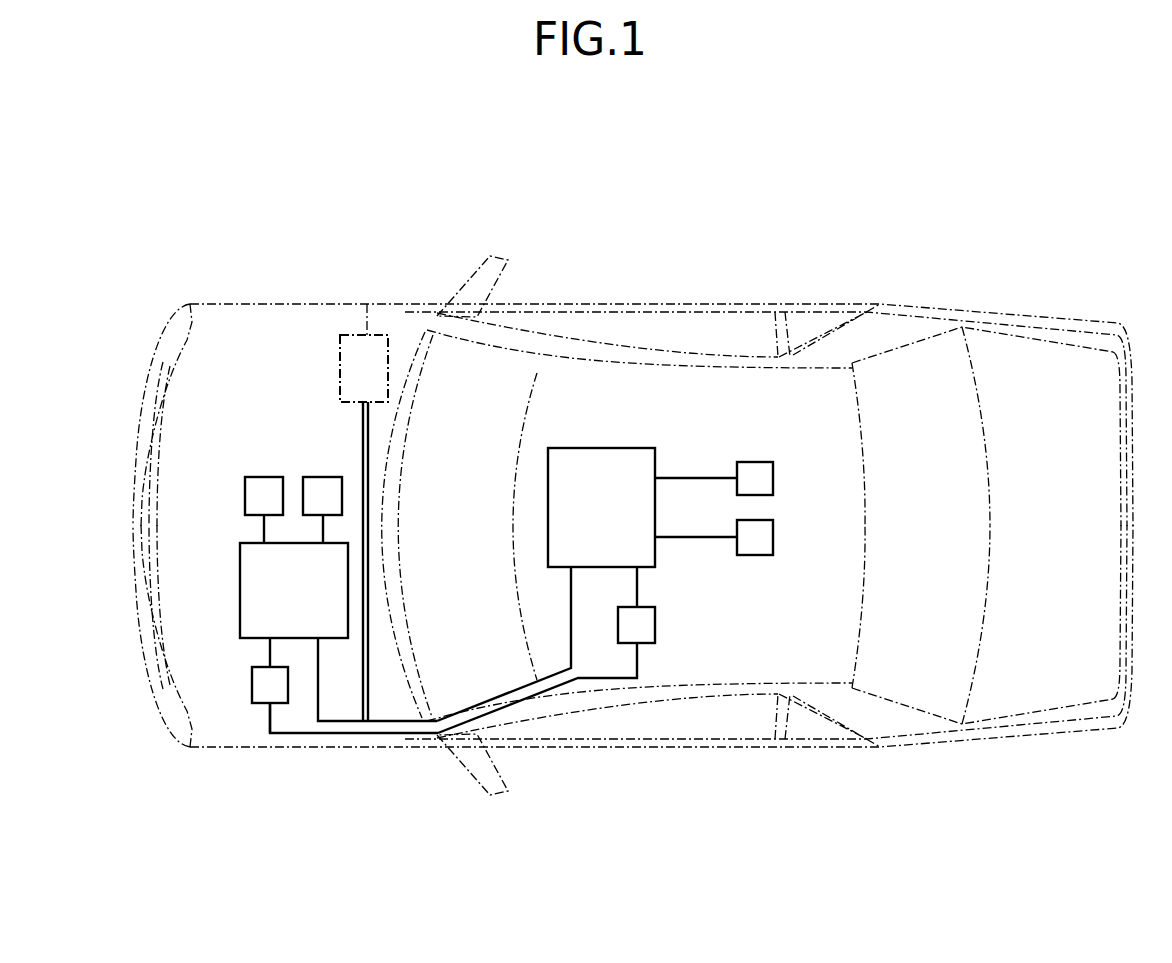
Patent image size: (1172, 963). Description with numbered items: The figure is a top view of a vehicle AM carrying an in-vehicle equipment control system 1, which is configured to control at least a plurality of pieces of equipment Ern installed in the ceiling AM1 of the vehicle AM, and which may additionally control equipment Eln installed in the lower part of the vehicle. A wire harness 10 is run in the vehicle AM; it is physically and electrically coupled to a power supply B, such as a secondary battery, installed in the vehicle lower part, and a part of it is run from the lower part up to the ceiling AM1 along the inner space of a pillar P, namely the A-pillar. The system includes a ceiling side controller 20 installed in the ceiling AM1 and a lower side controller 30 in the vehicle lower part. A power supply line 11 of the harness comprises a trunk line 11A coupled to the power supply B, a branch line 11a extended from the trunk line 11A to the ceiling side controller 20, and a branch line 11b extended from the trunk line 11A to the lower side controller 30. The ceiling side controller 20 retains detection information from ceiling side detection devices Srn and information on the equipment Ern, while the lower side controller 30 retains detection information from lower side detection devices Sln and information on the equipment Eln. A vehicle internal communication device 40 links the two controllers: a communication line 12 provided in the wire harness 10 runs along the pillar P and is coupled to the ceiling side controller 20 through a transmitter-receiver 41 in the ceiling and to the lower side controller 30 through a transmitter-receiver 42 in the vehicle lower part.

The in-vehicle equipment control system 1 is at (463, 159).
The wire harness 10 is at (392, 764).
The power supply line 11 is at (450, 548).
The trunk line 11A is at (362, 430).
The branch line 11a is at (573, 638).
The branch line 11b is at (318, 703).
The communication line 12 is at (270, 715).
The ceiling side controller 20 is at (582, 448).
The lower side controller 30 is at (240, 597).
The vehicle internal communication device 40 is at (393, 707).
The transmitter-receiver 41 is at (655, 630).
The transmitter-receiver 42 is at (252, 692).
The power supply B is at (370, 300).
The pillar P is at (512, 702).
The vehicle AM is at (203, 303).
The ceiling AM1 is at (607, 397).
The lower side detection devices Sln is at (318, 477).
The equipment Eln is at (262, 477).
The equipment Ern is at (774, 481).
The ceiling side detection devices Srn is at (774, 541).